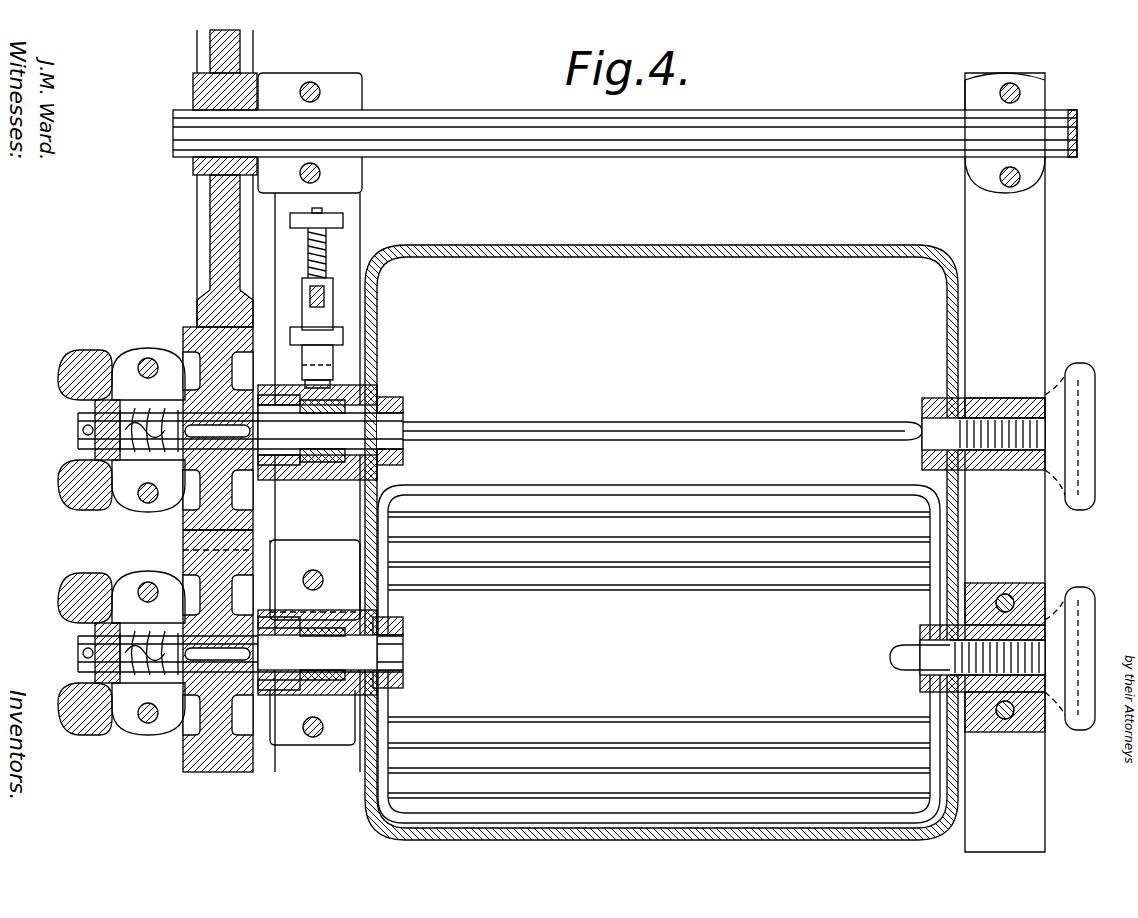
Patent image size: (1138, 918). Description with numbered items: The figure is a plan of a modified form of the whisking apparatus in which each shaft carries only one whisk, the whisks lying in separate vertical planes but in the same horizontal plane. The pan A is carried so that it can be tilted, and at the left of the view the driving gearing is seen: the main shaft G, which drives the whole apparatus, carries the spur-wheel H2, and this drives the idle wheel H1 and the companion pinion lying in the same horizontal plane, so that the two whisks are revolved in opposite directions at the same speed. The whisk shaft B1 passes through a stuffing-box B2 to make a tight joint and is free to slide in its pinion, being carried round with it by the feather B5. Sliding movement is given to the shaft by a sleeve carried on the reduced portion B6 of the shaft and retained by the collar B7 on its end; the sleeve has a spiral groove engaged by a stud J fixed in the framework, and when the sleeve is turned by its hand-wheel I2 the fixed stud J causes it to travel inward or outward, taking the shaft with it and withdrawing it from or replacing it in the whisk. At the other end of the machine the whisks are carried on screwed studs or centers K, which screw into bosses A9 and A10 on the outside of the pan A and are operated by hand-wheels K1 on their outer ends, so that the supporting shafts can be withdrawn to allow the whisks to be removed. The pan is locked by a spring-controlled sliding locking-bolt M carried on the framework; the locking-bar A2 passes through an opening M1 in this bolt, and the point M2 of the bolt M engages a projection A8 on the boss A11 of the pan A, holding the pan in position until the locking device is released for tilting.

The pan A is at (690, 258).
The locking-bar A2 is at (325, 300).
The projection A8 is at (300, 388).
The boss A9 is at (1030, 615).
The boss A10 is at (1028, 398).
The boss A11 is at (350, 393).
The shaft B1 is at (287, 650).
The stuffing-box B2 is at (330, 690).
The feather B5 is at (185, 722).
The reduced portion of shaft B6 is at (78, 675).
The collar B7 is at (78, 640).
The shaft G is at (725, 158).
The idle wheel H1 is at (190, 516).
The spur-wheel H2 is at (215, 232).
The hand-wheel I2 is at (90, 578).
The stud J is at (115, 700).
The screwed stud or center K is at (972, 414).
The hand-wheel K1 is at (1085, 388).
The locking-bolt M is at (322, 320).
The opening in locking-bolt M1 is at (322, 287).
The point of locking-bolt M2 is at (315, 370).